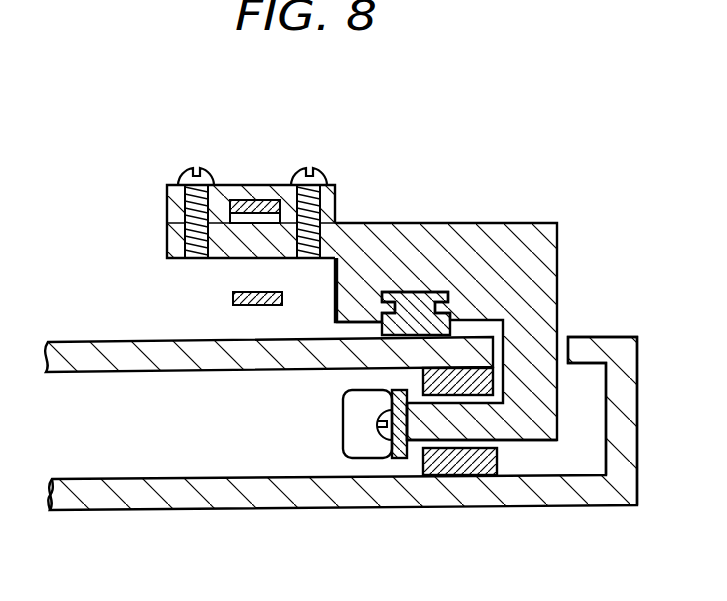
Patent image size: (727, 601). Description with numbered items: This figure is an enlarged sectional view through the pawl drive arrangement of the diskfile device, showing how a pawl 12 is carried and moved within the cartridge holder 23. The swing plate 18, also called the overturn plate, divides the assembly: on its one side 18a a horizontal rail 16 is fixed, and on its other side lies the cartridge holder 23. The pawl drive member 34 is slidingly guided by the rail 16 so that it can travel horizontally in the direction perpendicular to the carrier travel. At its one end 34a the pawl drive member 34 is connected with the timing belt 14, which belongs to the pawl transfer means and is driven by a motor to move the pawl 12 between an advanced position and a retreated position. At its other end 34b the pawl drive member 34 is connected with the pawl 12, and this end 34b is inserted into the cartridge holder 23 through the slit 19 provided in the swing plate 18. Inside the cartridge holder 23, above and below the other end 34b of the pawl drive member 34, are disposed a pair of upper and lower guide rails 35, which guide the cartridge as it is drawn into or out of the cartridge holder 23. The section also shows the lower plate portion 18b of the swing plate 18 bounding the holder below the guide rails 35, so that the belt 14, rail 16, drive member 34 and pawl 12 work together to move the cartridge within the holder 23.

The pawl 12 is at (352, 421).
The timing belt 14 is at (256, 291).
The horizontal rail 16 is at (418, 300).
The swing plate 18 is at (108, 350).
The one side of the overturn plate 18a is at (313, 327).
The lower plate 18b is at (336, 510).
The slit 19 is at (568, 343).
The cartridge holder 23 is at (73, 474).
The pawl drive member 34 is at (533, 264).
The one end of the pawl drive member 34a is at (229, 246).
The other end of the pawl drive member 34b is at (512, 427).
The guide rail 35 is at (433, 387).